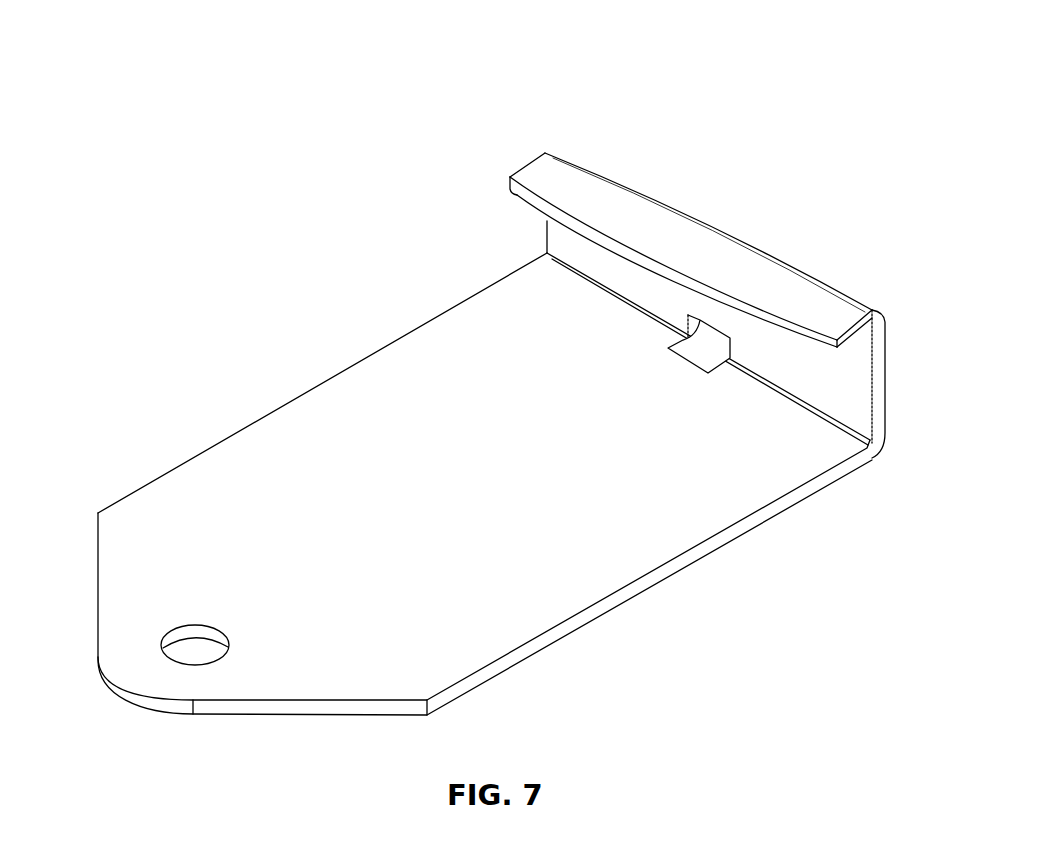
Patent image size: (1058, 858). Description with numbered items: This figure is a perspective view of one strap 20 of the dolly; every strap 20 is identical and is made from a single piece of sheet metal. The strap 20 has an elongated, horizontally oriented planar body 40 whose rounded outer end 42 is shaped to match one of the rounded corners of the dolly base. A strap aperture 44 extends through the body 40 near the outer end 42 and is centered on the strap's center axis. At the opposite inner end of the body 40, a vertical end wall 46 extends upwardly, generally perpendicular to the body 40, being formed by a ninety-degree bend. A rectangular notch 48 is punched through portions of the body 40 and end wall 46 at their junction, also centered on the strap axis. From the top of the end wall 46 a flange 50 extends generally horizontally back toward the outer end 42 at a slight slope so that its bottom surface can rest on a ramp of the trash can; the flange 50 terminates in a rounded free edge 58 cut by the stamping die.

The strap 20 is at (99, 36).
The body 40 is at (390, 412).
The rounded outer end 42 is at (258, 707).
The strap aperture 44 is at (193, 652).
The end wall 46 is at (878, 388).
The notch 48 is at (710, 350).
The flange 50 is at (570, 202).
The rounded free edge 58 is at (523, 198).